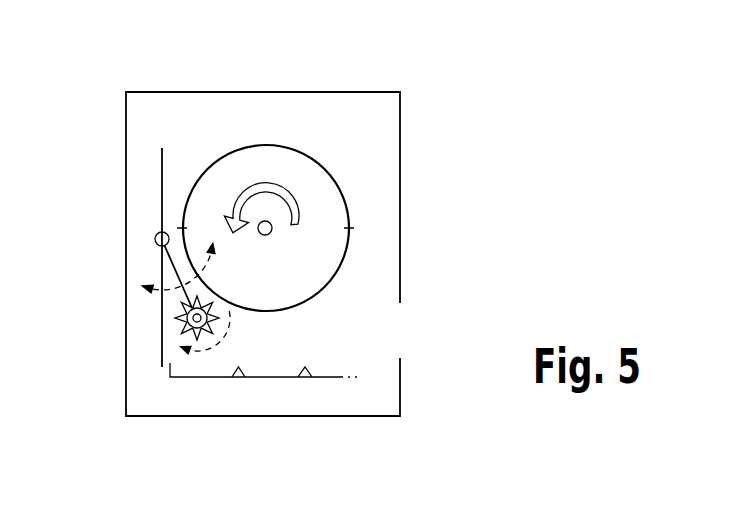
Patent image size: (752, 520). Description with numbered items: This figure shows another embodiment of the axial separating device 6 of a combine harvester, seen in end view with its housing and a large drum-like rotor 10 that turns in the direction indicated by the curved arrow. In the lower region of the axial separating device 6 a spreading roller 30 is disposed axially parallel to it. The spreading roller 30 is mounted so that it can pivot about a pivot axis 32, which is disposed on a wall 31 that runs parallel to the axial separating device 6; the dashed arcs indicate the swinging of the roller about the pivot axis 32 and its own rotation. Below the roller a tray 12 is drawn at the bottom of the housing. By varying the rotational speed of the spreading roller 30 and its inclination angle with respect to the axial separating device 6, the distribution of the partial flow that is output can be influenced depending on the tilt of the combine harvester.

The axial separating device 6 is at (360, 121).
The rotating drum 10 is at (340, 268).
The collecting tray 12 is at (270, 377).
The spreading roller 30 is at (263, 327).
The wall 31 is at (164, 162).
The pivot axis 32 is at (155, 238).